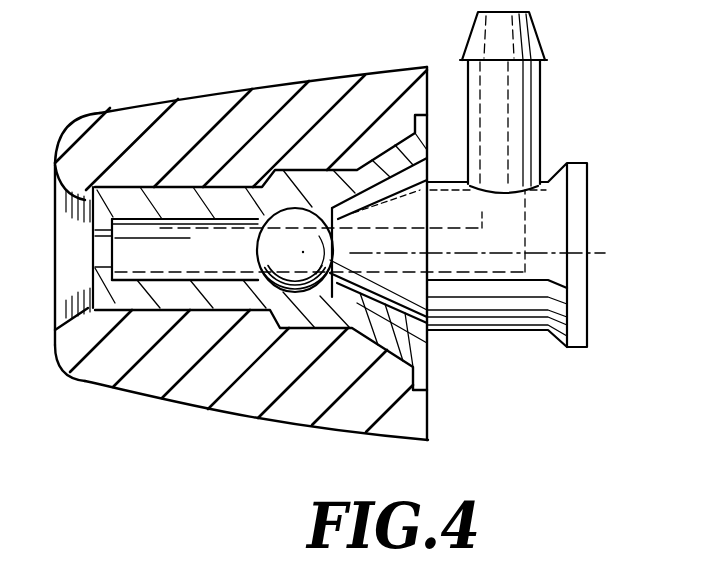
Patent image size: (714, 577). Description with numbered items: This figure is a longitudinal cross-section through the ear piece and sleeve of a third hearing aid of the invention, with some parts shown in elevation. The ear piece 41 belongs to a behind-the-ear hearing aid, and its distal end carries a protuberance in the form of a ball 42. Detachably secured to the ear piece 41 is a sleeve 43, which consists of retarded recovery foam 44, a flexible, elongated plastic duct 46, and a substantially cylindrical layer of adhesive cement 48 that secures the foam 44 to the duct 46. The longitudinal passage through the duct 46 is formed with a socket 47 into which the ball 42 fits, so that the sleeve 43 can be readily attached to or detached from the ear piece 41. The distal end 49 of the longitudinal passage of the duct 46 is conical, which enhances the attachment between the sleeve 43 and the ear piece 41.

The ear piece 41 is at (520, 330).
The ball 42 is at (258, 246).
The sleeve 43 is at (334, 70).
The retarded recovery foam 44 is at (222, 113).
The flexible, elongated plastic duct 46 is at (138, 205).
The socket 47 is at (293, 296).
The layer of adhesive cement 48 is at (133, 312).
The distal end of the longitudinal passage 49 is at (412, 338).